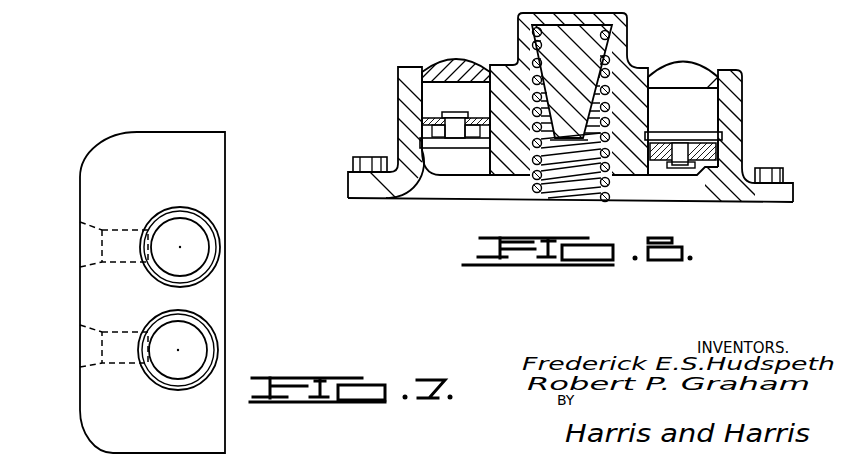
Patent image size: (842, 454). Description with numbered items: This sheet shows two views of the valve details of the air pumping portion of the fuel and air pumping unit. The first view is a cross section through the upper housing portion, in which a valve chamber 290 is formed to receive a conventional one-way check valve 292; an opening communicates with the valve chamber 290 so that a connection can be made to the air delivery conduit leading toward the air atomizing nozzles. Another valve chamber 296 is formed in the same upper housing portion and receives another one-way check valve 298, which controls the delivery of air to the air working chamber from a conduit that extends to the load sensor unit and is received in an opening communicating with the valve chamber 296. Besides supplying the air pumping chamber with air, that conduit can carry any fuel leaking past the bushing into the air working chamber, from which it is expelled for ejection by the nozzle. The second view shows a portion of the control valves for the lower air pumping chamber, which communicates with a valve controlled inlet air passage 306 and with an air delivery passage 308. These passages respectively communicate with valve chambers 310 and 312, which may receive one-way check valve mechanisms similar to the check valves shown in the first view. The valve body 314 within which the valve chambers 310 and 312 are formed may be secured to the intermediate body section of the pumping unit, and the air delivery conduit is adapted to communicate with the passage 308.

In FIG. 6, the valve chamber 290 is at (433, 86).
In FIG. 6, the one-way check valve 292 is at (445, 148).
In FIG. 6, the valve chamber 296 is at (667, 92).
In FIG. 6, the one-way check valve 298 is at (716, 169).
In FIG. 7, the valve controlled inlet air passage 306 is at (80, 248).
In FIG. 7, the air delivery passage 308 is at (80, 349).
In FIG. 7, the valve chamber 310 is at (199, 231).
In FIG. 7, the valve chamber 312 is at (197, 333).
In FIG. 7, the valve body 314 is at (225, 180).